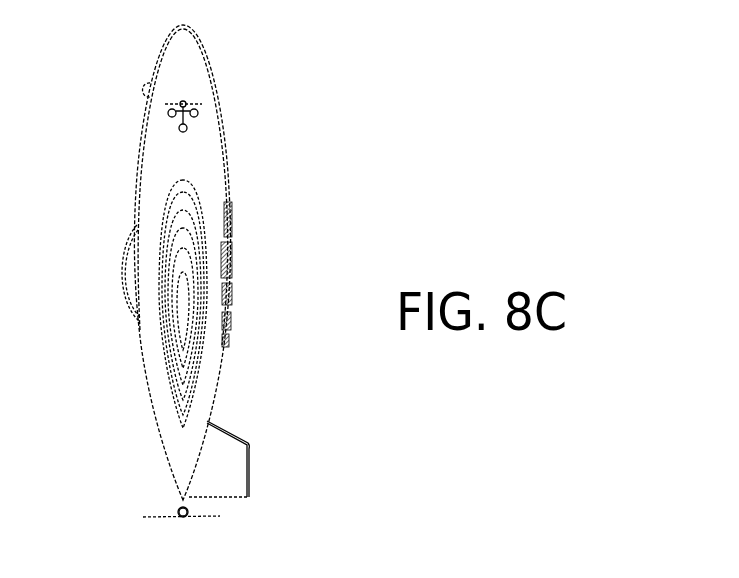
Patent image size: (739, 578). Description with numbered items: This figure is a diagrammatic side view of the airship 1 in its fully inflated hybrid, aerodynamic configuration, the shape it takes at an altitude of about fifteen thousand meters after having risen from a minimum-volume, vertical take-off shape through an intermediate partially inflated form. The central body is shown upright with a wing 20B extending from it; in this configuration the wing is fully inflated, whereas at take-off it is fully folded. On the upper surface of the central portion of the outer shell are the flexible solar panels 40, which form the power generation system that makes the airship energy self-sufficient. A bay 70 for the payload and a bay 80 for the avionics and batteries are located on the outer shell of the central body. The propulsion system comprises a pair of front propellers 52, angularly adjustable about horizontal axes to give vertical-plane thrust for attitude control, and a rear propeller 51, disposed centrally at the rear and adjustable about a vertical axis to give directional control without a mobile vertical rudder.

The airship 1 is at (278, 50).
The bay for the payload 70 is at (141, 90).
The front propellers 52 is at (153, 118).
The bay for the avionics 80 is at (120, 277).
The flexible solar panels 40 is at (203, 297).
The wing 20B is at (184, 350).
The rear propeller 51 is at (178, 515).